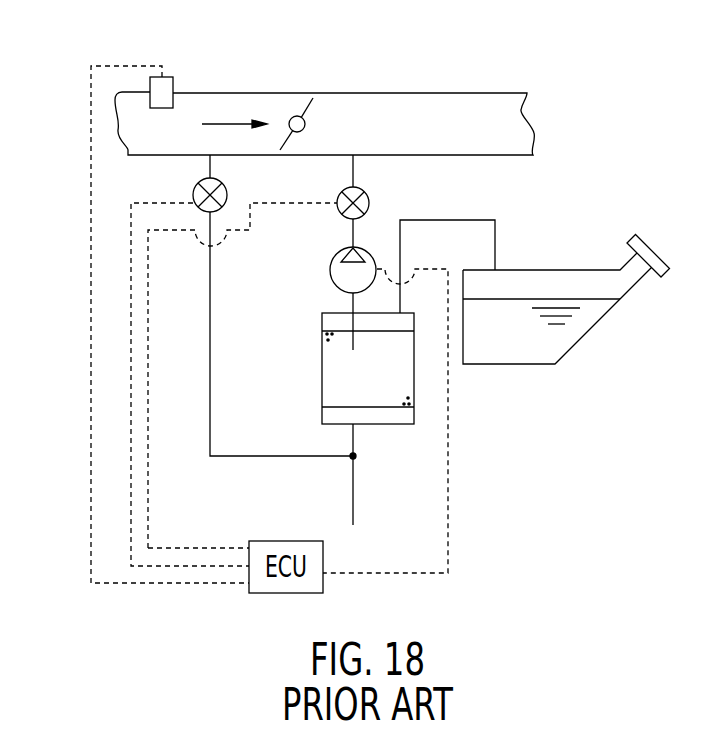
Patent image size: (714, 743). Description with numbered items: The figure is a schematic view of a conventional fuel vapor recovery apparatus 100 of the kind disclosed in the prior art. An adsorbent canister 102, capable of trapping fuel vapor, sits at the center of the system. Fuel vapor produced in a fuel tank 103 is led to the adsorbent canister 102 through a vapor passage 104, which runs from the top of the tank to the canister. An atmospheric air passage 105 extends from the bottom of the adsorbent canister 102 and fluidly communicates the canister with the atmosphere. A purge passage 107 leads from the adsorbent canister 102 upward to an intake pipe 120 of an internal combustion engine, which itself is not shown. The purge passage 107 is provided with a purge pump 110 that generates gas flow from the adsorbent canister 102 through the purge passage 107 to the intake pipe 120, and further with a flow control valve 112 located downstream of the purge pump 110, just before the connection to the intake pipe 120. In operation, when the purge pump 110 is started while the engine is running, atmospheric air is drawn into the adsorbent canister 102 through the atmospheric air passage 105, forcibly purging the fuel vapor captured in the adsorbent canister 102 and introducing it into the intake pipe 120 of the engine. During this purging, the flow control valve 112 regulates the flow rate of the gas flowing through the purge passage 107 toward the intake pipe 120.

The fuel vapor recovery apparatus 100 is at (60, 213).
The intake pipe 120 is at (397, 108).
The flow control valve 112 is at (370, 203).
The purge passage 107 is at (352, 236).
The purge pump 110 is at (342, 274).
The vapor passage 104 is at (495, 242).
The adsorbent canister 102 is at (338, 380).
The fuel tank 103 is at (515, 343).
The atmospheric air passage 105 is at (352, 490).